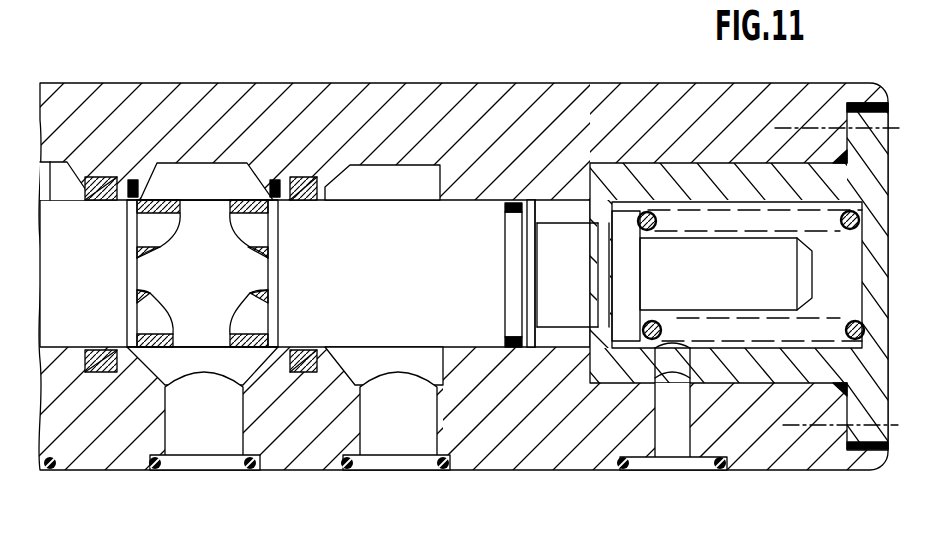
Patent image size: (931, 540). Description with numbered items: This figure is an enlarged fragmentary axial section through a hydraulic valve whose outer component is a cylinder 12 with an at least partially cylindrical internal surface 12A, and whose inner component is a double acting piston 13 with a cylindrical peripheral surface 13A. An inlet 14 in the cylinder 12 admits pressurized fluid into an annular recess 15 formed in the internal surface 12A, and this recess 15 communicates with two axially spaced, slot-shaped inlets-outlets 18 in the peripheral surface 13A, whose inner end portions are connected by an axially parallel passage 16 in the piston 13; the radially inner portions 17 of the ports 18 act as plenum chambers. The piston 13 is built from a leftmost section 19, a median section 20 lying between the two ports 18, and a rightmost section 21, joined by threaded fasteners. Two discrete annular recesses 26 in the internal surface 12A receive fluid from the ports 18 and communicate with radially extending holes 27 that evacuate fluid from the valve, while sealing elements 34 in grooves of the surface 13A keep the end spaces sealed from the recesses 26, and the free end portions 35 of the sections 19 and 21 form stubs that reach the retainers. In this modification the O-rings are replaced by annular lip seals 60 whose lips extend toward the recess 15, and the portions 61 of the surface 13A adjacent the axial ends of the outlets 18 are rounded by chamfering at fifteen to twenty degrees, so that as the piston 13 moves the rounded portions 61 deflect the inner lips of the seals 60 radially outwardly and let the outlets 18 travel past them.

The cylinder 12 is at (370, 110).
The internal surface 12A is at (62, 210).
The piston 13 is at (527, 213).
The peripheral surface 13A is at (487, 360).
The inlet 14 is at (200, 430).
The annular recess 15 is at (200, 175).
The passage 16 is at (162, 230).
The radially inner portions 17 is at (281, 236).
The inlets-outlets 18 is at (127, 208).
The leftmost section 19 is at (77, 284).
The median section 20 is at (207, 284).
The rightmost section 21 is at (399, 284).
The annular recesses 26 is at (397, 175).
The holes 27 is at (393, 430).
The sealing elements 34 is at (507, 207).
The free end portions 35 is at (575, 284).
The annular lip seals 60 is at (97, 190).
The rounded surface portions 61 is at (136, 185).